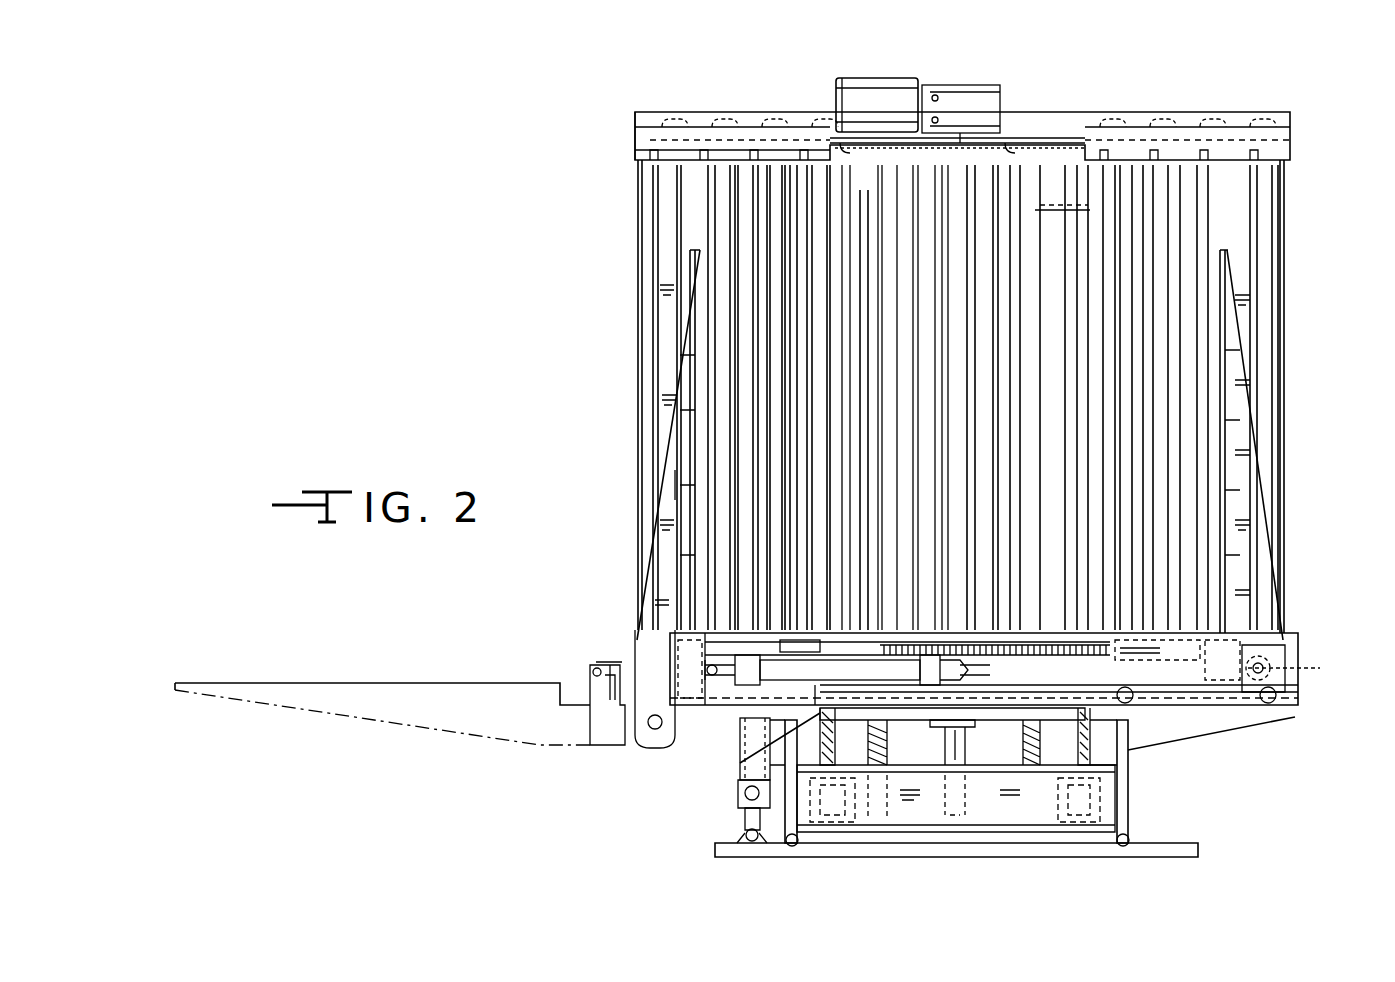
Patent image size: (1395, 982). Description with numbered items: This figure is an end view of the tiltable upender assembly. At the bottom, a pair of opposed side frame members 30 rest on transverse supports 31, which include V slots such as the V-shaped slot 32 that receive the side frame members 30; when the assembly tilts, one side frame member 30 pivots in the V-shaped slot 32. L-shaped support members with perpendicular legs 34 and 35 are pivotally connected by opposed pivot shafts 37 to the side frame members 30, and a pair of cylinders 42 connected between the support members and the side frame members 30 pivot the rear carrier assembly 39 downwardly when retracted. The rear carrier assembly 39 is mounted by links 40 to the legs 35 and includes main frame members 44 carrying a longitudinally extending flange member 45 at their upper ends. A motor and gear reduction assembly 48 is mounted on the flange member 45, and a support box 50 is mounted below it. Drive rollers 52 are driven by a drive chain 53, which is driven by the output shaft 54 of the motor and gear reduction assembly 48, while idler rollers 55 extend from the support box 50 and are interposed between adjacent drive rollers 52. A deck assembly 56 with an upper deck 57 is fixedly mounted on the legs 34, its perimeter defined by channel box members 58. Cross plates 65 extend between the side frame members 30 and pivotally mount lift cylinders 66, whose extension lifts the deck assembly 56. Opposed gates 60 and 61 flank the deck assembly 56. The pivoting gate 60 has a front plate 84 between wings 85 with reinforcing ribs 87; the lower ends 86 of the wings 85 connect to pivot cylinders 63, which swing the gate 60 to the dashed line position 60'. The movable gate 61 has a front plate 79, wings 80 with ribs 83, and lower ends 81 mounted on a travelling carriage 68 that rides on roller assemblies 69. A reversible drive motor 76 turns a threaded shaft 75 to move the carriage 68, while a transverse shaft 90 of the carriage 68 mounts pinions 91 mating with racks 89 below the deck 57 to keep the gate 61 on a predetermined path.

The side frame members 30 is at (790, 830).
The transverse supports 31 is at (1177, 843).
The V-shaped slot 32 is at (790, 842).
The leg 34 is at (743, 740).
The leg 35 is at (1090, 213).
The pivot shafts 37 is at (795, 798).
The rear carrier assembly 39 is at (635, 112).
The links 40 is at (803, 168).
The cylinders 42 is at (850, 825).
The main frame members 44 is at (1050, 155).
The flange member 45 is at (675, 110).
The motor and gear reduction assembly 48 is at (845, 75).
The support box 50 is at (635, 152).
The drive rollers 52 is at (1208, 165).
The drive chain 53 is at (1013, 132).
The output shaft 54 is at (950, 85).
The idler rollers 55 is at (760, 165).
The deck assembly 56 is at (860, 645).
The upper deck 57 is at (753, 635).
The channel box members 58 is at (675, 667).
The pivoting gate 60 is at (630, 400).
The dashed line position of gate 60' is at (382, 737).
The movable gate 61 is at (1270, 430).
The pivot cylinders 63 is at (820, 715).
The cross plates 65 is at (918, 800).
The lift cylinders 66 is at (738, 782).
The travelling carriage 68 is at (1160, 638).
The roller assemblies 69 is at (1120, 688).
The threaded shaft 75 is at (1020, 660).
The drive motor 76 is at (800, 640).
The front plate 79 is at (1245, 373).
The wings 80 is at (1250, 550).
The lower ends 81 is at (1247, 658).
The ribs 83 is at (1230, 352).
The front plate 84 is at (700, 290).
The wings 85 is at (676, 498).
The lower ends 86 is at (635, 738).
The reinforcing ribs 87 is at (678, 410).
The racks 89 is at (960, 642).
The transverse shaft 90 is at (1286, 648).
The pinions 91 is at (1303, 669).